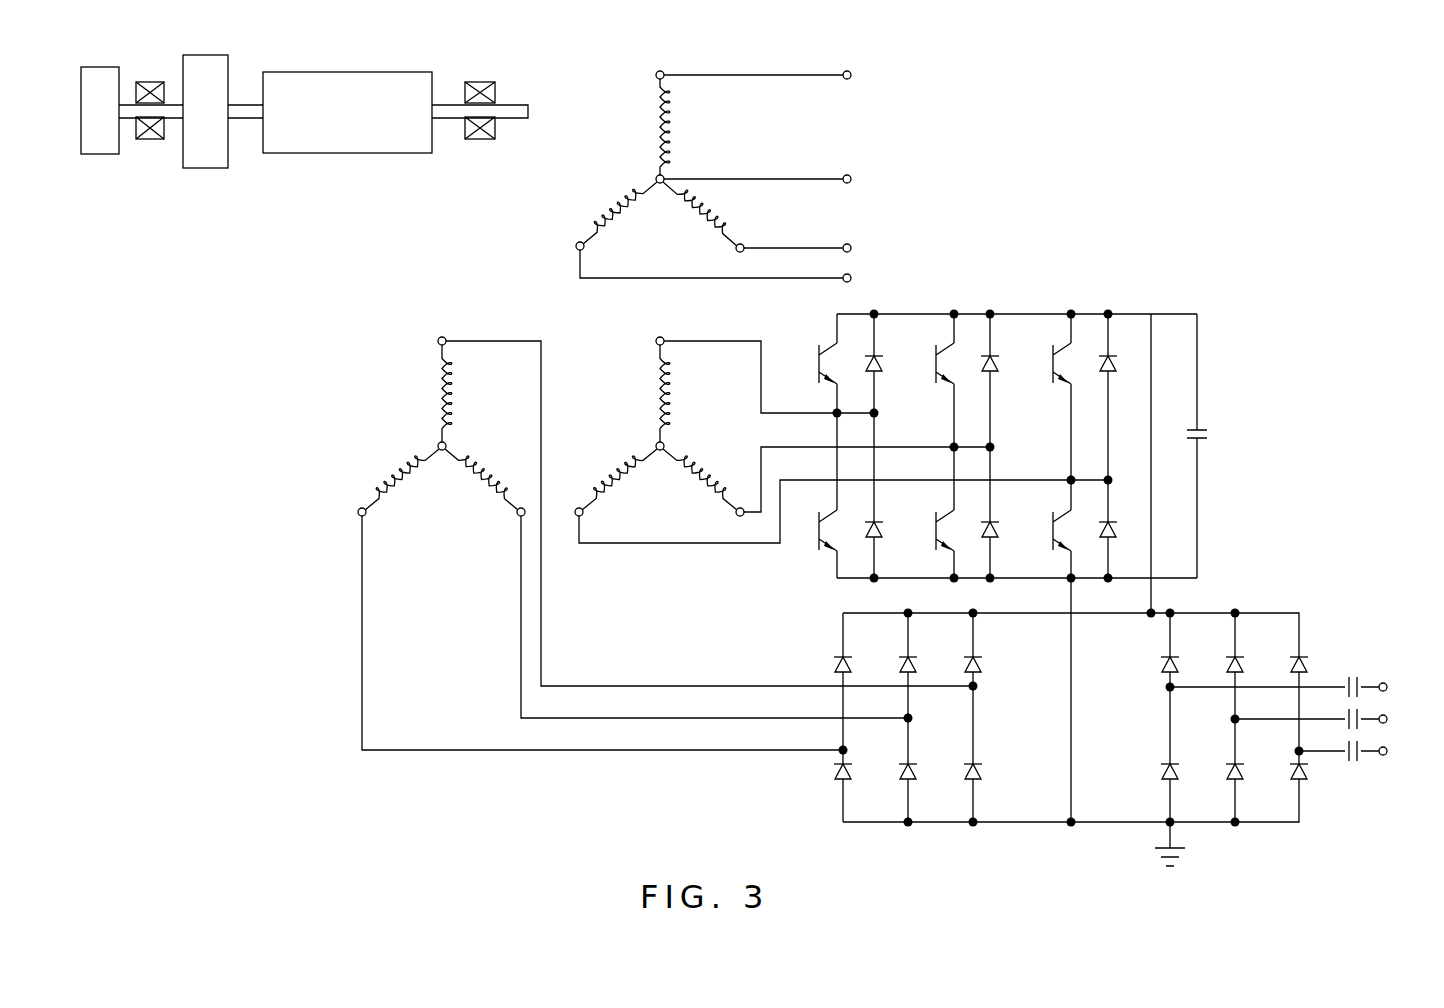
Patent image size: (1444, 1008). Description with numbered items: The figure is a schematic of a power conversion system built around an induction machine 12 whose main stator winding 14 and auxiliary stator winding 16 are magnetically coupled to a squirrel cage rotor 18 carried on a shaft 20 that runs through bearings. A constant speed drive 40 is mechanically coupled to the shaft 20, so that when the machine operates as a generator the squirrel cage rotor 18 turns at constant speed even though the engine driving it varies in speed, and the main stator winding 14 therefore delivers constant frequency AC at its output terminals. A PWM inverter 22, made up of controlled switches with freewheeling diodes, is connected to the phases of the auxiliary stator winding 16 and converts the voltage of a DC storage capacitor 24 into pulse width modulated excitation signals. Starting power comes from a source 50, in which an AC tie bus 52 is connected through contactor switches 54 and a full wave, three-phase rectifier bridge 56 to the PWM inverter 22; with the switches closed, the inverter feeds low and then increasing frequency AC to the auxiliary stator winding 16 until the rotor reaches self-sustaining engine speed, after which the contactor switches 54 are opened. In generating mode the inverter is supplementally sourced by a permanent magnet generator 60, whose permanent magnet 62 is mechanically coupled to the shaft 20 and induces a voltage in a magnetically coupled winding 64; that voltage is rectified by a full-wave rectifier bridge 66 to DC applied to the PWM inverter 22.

The induction machine 12 is at (598, 87).
The main stator winding 14 is at (636, 170).
The auxiliary stator winding 16 is at (636, 434).
The squirrel cage rotor 18 is at (317, 153).
The shaft 20 is at (510, 122).
The PWM inverter 22 is at (992, 296).
The DC storage capacitor 24 is at (1206, 440).
The constant speed drive 40 is at (95, 154).
The source 50 is at (1278, 587).
The AC tie bus 52 is at (1397, 679).
The contactor switches 54 is at (1354, 778).
The full wave, three-phase rectifier bridge 56 is at (1333, 636).
The permanent magnet generator 60 is at (467, 316).
The permanent magnet 62 is at (208, 168).
The winding 64 is at (416, 434).
The full-wave rectifier bridge 66 is at (937, 844).